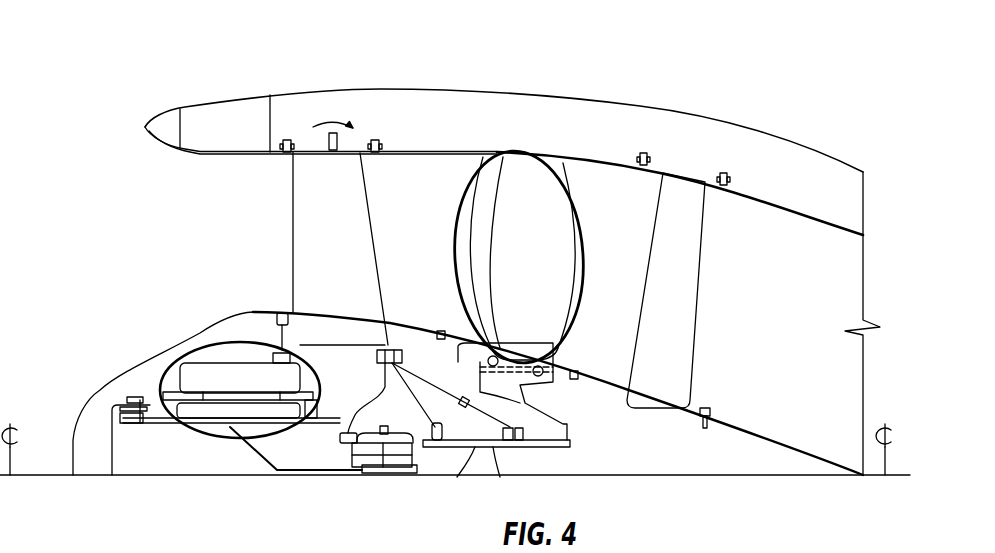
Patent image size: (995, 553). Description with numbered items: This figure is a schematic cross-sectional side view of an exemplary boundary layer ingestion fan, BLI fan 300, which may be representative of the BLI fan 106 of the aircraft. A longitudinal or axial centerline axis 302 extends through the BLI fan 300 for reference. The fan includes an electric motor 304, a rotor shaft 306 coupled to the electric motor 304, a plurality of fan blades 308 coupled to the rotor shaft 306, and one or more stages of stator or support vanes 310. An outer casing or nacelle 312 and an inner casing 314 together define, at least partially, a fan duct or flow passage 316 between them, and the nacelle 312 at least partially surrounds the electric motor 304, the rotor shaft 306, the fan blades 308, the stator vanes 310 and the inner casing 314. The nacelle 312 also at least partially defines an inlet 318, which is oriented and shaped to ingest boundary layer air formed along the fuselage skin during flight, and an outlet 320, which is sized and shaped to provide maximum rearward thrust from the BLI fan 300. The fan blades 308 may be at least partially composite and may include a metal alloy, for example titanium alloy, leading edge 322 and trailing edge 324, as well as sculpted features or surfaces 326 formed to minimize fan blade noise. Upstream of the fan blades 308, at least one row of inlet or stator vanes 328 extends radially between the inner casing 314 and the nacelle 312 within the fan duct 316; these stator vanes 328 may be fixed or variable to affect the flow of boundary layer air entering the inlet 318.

The BLI fan 106 is at (657, 80).
The BLI fan 300 is at (650, 95).
The axial centerline axis 302 is at (35, 477).
The electric motor 304 is at (187, 428).
The rotor shaft 306 is at (473, 447).
The fan blades 308 is at (572, 193).
The stator vanes 310 is at (685, 253).
The nacelle 312 is at (322, 90).
The inner casing 314 is at (757, 420).
The fan duct 316 is at (430, 234).
The inlet 318 is at (177, 172).
The outlet 320 is at (835, 263).
The leading edge 322 is at (473, 260).
The trailing edge 324 is at (575, 293).
The sculpted features 326 is at (543, 152).
The inlet stator vanes 328 is at (313, 213).